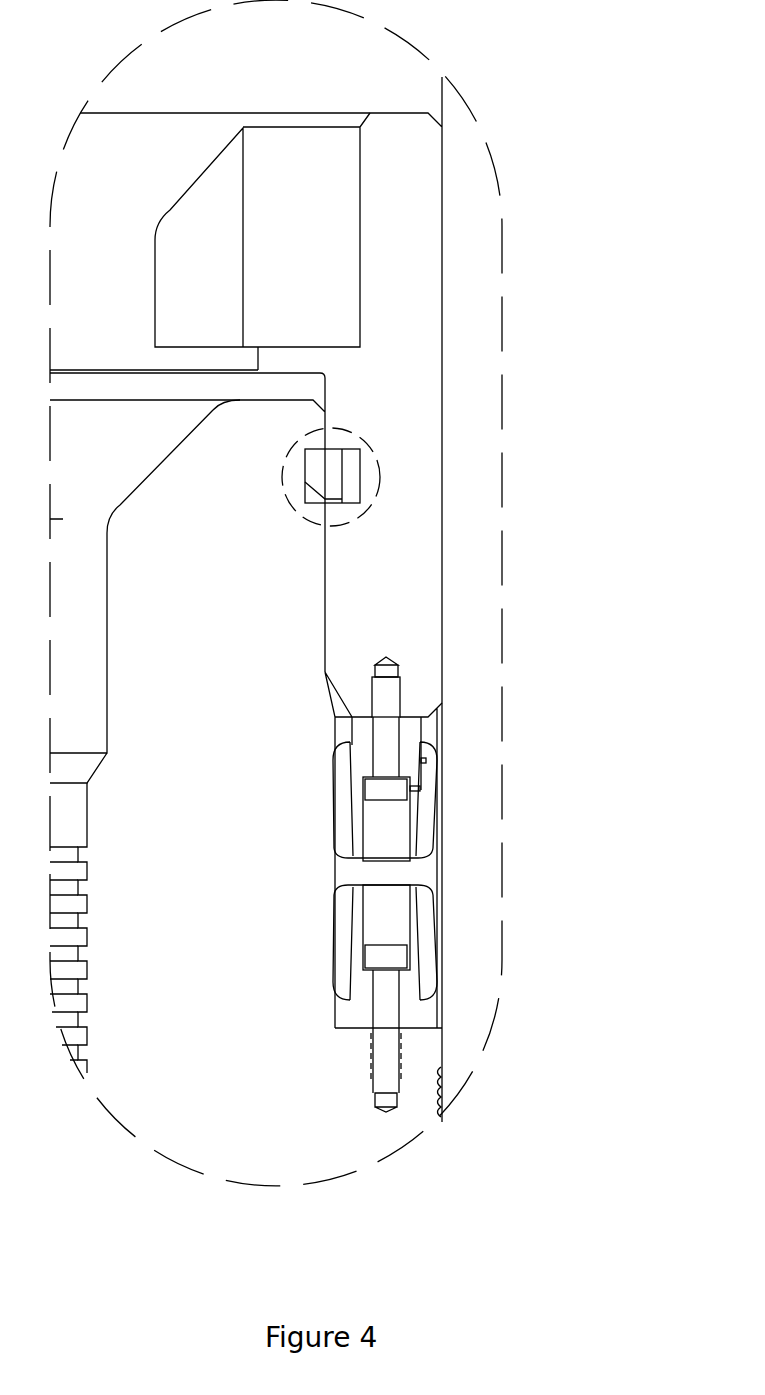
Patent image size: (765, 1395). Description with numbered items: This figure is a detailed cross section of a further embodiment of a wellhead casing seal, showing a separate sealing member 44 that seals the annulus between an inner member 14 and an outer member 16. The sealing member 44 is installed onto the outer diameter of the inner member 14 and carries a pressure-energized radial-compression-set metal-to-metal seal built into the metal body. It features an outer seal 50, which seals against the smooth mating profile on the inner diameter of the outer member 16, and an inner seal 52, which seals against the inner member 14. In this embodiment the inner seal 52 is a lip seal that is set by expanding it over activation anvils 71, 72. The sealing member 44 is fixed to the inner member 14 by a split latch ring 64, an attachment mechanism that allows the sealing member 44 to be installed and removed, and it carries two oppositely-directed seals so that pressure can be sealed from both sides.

The inner member 14 is at (280, 1142).
The outer member 16 is at (468, 206).
The sealing member 44 is at (380, 873).
The outer seal 50 is at (445, 977).
The inner seal 52 is at (330, 977).
The split latch ring 64 is at (380, 477).
The activation anvil 71 is at (359, 730).
The activation anvil 72 is at (360, 1013).